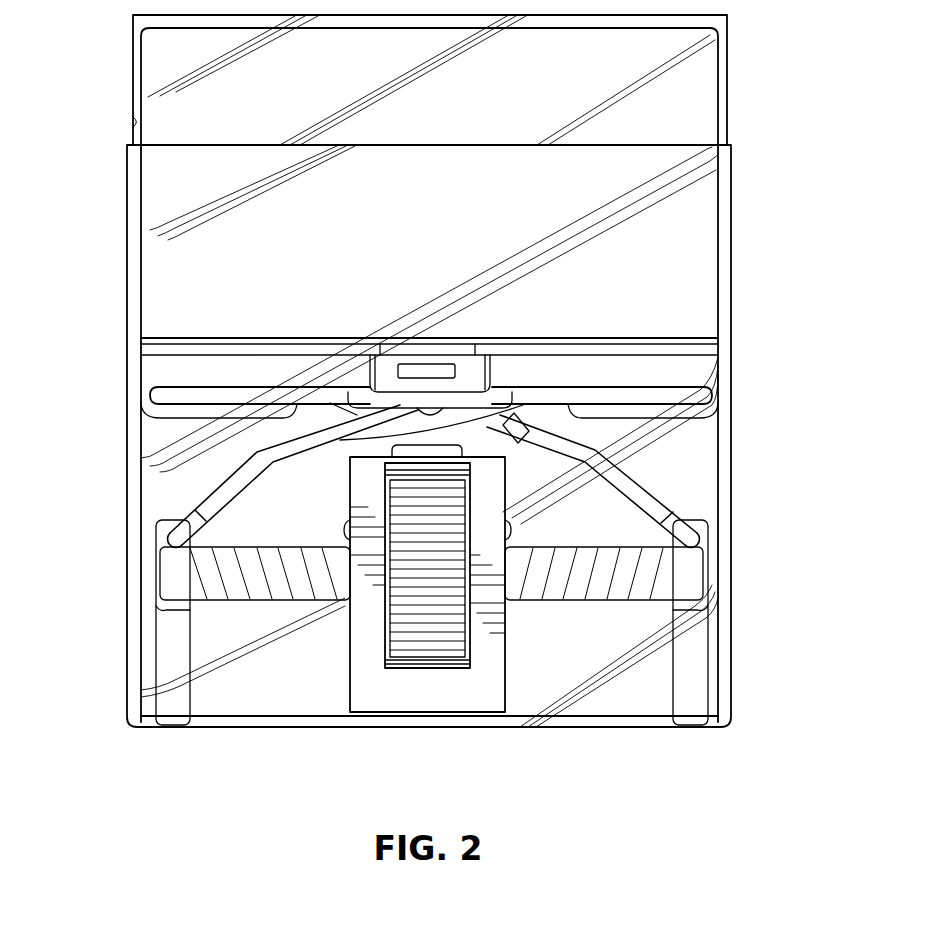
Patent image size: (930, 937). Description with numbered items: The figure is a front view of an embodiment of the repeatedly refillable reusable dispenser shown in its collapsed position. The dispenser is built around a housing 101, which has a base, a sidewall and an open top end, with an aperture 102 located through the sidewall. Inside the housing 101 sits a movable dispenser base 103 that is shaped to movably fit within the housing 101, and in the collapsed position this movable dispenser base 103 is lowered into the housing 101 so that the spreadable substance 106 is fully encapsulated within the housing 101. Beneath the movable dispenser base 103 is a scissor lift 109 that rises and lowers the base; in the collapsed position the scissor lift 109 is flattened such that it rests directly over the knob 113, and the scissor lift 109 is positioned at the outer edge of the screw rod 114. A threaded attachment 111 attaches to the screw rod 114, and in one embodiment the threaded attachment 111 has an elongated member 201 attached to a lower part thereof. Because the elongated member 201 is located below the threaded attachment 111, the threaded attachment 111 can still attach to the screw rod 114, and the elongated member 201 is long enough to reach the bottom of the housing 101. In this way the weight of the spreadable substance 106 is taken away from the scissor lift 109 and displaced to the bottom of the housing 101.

The housing 101 is at (104, 288).
The aperture 102 is at (366, 673).
The movable dispenser base 103 is at (720, 362).
The spreadable substance 106 is at (697, 232).
The scissor lift 109 is at (648, 472).
The threaded attachment 111 is at (160, 588).
The knob 113 is at (437, 660).
The screw rod 114 is at (706, 574).
The elongated member 201 is at (167, 668).